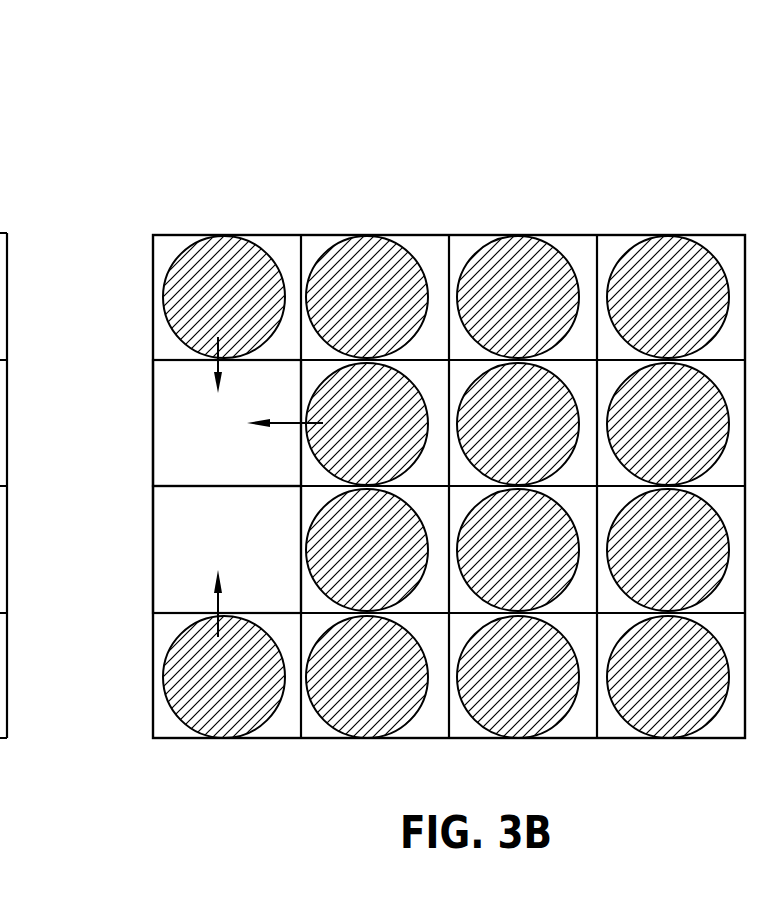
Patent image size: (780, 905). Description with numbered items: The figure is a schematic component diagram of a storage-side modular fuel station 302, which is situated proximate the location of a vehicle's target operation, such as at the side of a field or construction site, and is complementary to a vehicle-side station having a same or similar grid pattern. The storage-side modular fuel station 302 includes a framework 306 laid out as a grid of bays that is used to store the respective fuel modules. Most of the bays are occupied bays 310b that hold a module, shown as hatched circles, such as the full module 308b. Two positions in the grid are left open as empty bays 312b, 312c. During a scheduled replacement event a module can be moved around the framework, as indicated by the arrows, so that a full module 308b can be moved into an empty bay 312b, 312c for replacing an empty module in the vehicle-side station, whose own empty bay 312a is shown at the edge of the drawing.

The storage-side modular fuel station 302 is at (668, 92).
The framework 306 is at (640, 235).
The full module 308b is at (247, 262).
The occupied bays 310b is at (463, 245).
The empty bay 312a is at (0, 312).
The empty bay 312b is at (182, 588).
The empty bay 312c is at (202, 447).